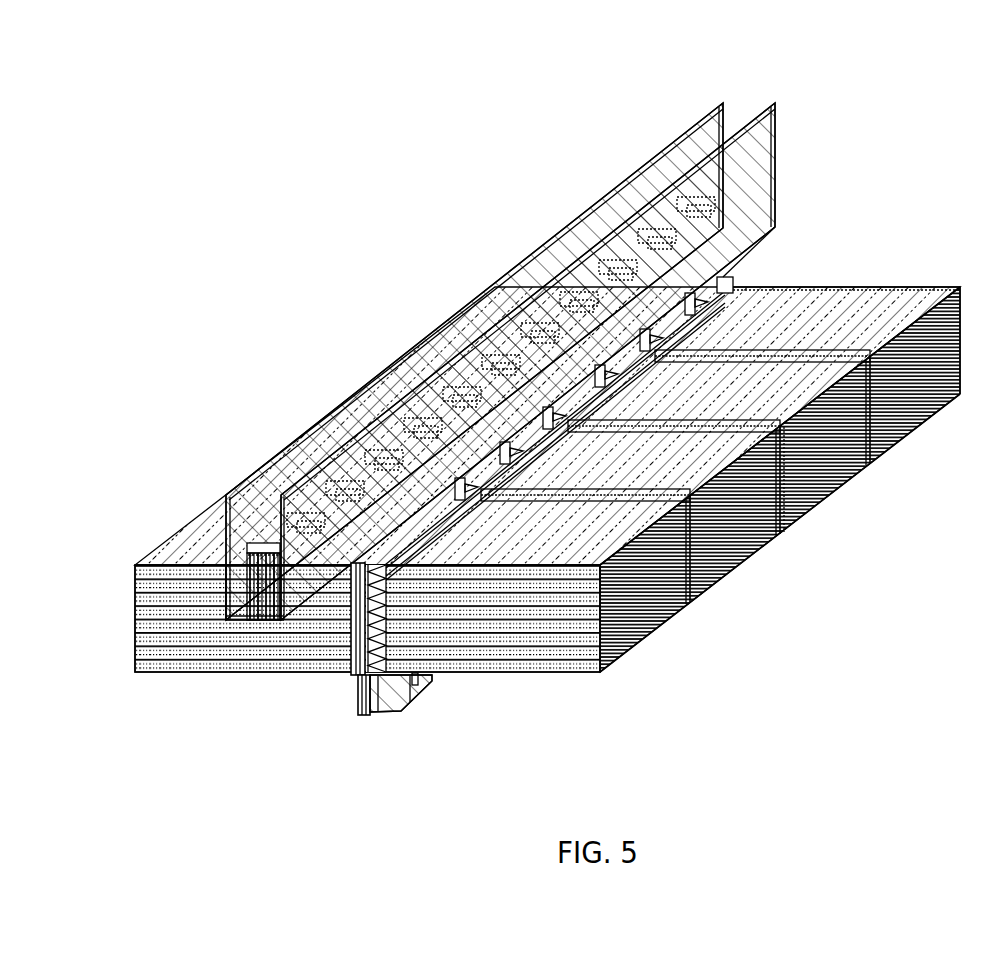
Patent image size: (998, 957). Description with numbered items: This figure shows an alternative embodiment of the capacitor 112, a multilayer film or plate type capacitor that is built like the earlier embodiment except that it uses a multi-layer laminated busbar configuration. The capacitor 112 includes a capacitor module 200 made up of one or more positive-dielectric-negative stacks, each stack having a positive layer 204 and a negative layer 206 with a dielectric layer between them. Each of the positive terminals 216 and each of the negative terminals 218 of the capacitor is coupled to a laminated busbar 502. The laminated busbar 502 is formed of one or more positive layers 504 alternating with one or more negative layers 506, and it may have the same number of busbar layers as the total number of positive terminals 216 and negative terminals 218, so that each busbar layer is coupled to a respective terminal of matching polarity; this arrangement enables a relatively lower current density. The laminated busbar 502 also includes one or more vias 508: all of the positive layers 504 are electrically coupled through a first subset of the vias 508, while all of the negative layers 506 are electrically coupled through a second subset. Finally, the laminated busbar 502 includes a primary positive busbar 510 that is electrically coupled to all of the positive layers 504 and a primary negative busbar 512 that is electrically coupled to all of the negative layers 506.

The capacitor 112 is at (287, 225).
The capacitor module 200 is at (106, 562).
The positive layer 204 is at (217, 519).
The negative layer 206 is at (846, 318).
The positive terminal 216 is at (392, 699).
The negative terminal 218 is at (361, 682).
The laminated busbar 502 is at (428, 473).
The positive layer 504 is at (229, 562).
The negative layer 506 is at (790, 515).
The vias 508 is at (358, 468).
The primary positive busbar 510 is at (756, 113).
The primary negative busbar 512 is at (657, 153).